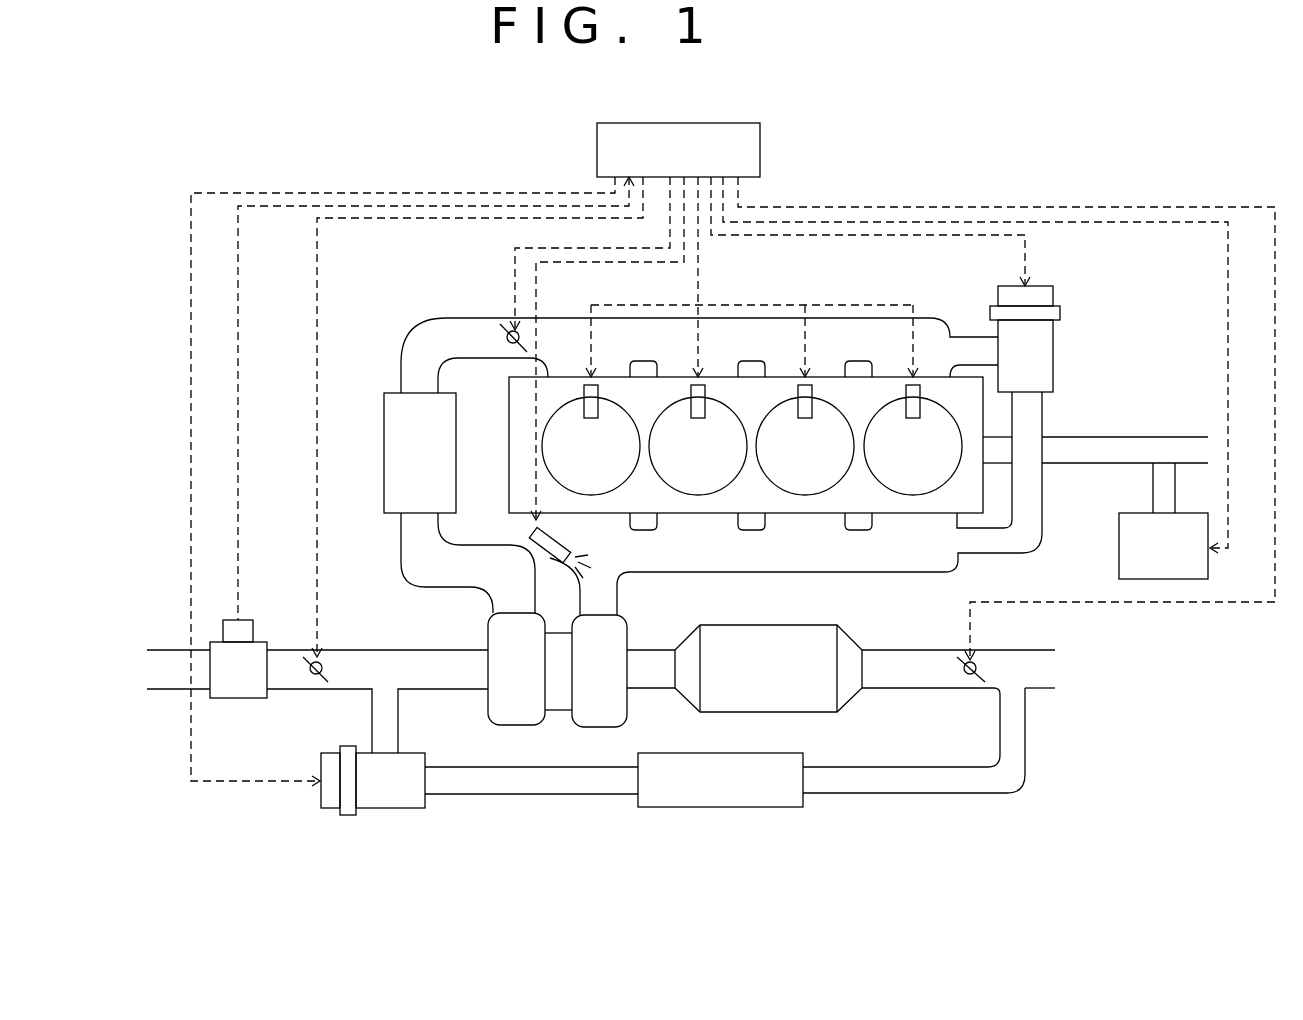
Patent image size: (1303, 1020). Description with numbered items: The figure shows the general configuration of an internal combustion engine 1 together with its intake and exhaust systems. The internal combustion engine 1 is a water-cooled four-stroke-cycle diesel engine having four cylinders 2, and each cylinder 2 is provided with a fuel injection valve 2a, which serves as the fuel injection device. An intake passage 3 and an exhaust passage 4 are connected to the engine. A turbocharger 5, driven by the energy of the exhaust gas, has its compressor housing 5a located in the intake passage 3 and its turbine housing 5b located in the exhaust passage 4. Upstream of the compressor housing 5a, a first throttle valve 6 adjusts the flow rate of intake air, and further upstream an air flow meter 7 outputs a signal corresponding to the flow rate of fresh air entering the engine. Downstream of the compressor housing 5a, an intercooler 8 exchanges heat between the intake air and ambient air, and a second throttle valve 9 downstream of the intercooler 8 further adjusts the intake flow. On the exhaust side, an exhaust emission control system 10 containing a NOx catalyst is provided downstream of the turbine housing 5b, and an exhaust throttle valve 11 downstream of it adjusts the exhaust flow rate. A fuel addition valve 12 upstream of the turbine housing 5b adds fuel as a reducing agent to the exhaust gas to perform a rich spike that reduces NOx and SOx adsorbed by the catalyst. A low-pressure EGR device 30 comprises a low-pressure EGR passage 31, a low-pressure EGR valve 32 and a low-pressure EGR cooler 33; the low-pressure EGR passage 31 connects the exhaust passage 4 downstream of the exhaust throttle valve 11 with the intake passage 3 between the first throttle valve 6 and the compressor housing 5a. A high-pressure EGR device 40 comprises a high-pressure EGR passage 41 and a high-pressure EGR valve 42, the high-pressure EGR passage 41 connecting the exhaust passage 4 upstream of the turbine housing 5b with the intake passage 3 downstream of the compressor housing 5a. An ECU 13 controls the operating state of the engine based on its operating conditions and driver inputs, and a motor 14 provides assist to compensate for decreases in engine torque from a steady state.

The internal combustion engine 1 is at (927, 306).
The cylinder 2 is at (957, 410).
The fuel injection valve 2a is at (903, 390).
The intake passage 3 is at (540, 317).
The exhaust passage 4 is at (655, 572).
The turbocharger 5 is at (521, 740).
The compressor housing 5a is at (517, 727).
The turbine housing 5b is at (593, 728).
The first throttle valve 6 is at (305, 680).
The air flow meter 7 is at (257, 630).
The intercooler 8 is at (383, 450).
The second throttle valve 9 is at (503, 350).
The exhaust emission control system 10 is at (768, 713).
The exhaust throttle valve 11 is at (958, 670).
The fuel addition valve 12 is at (530, 547).
The ECU 13 is at (760, 160).
The motor 14 is at (1119, 560).
The low-pressure EGR device 30 is at (566, 807).
The low-pressure EGR passage 31 is at (833, 795).
The low-pressure EGR valve 32 is at (370, 813).
The low-pressure EGR cooler 33 is at (717, 808).
The high-pressure EGR device 40 is at (1062, 277).
The high-pressure EGR passage 41 is at (1042, 487).
The high-pressure EGR valve 42 is at (1055, 332).